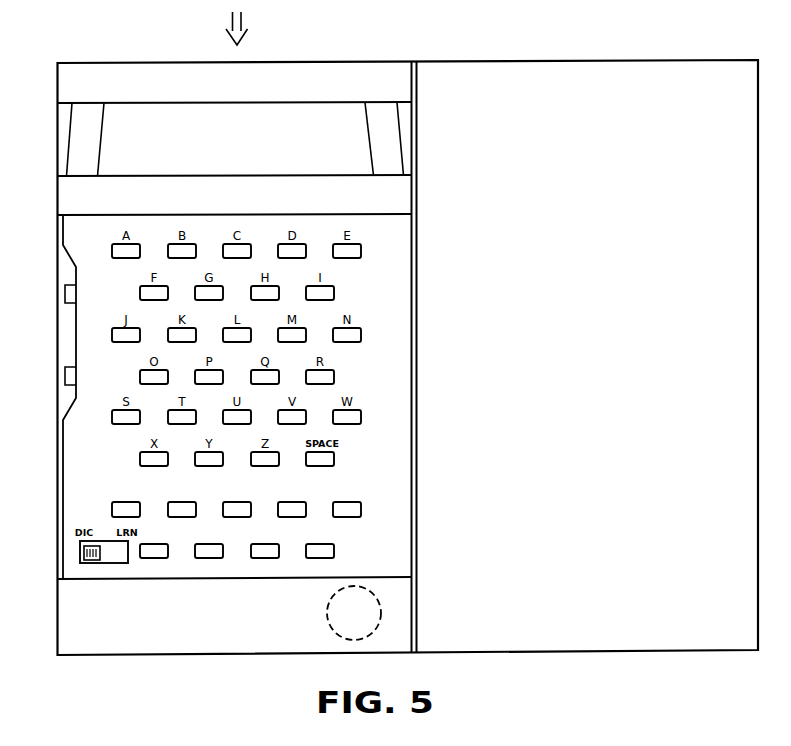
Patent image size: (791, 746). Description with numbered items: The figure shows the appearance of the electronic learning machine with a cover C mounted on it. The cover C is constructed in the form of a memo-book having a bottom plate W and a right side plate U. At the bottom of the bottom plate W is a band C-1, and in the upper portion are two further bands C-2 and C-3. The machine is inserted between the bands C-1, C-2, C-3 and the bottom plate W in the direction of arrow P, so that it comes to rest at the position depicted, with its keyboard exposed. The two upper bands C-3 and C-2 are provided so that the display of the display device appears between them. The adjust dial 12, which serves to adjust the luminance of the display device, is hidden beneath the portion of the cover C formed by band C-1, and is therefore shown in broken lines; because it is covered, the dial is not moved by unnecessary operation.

The cover C is at (483, 655).
The band C-1 is at (103, 646).
The band C-2 is at (57, 201).
The band C-3 is at (57, 79).
The right side plate U is at (728, 96).
The bottom plate W is at (60, 338).
The arrow P is at (245, 28).
The adjust dial 12 is at (330, 607).